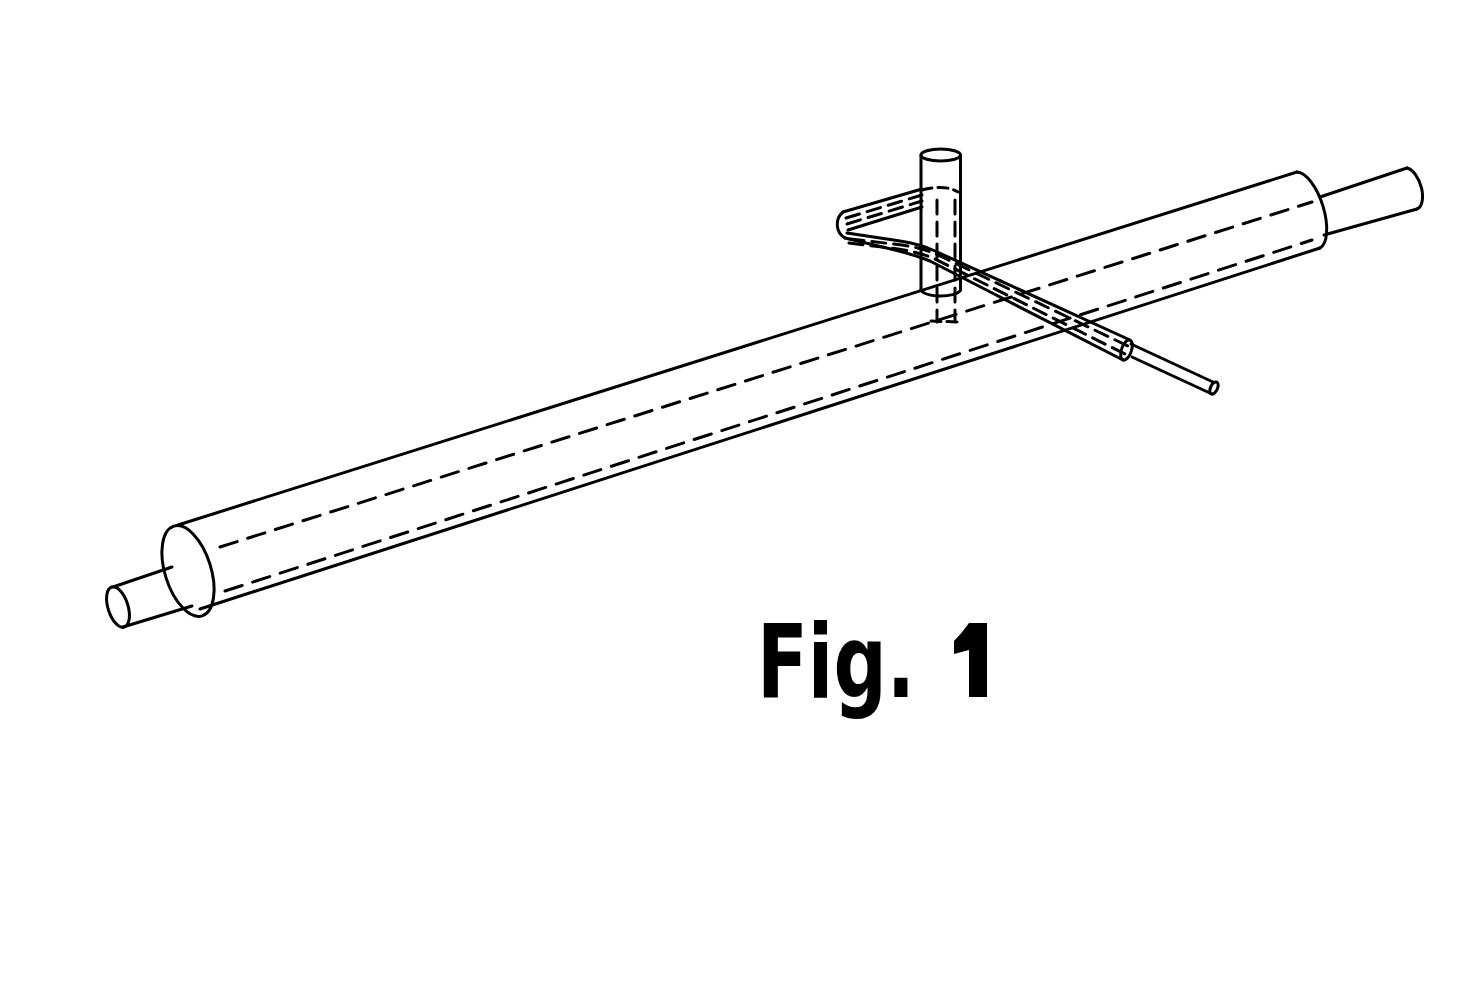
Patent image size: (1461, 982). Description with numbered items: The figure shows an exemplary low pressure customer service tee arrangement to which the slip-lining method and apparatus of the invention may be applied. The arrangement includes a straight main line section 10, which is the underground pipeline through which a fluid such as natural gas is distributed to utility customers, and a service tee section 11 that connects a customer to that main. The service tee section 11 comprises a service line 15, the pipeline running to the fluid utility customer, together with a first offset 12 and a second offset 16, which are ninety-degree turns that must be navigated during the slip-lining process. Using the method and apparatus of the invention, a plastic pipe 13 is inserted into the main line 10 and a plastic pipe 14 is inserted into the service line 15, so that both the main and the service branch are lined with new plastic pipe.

The straight main line section 10 is at (1147, 218).
The service tee section 11 is at (947, 148).
The first offset 12 is at (834, 221).
The plastic pipe 13 is at (1368, 226).
The plastic pipe 14 is at (1167, 376).
The service line 15 is at (1080, 347).
The second offset 16 is at (961, 178).